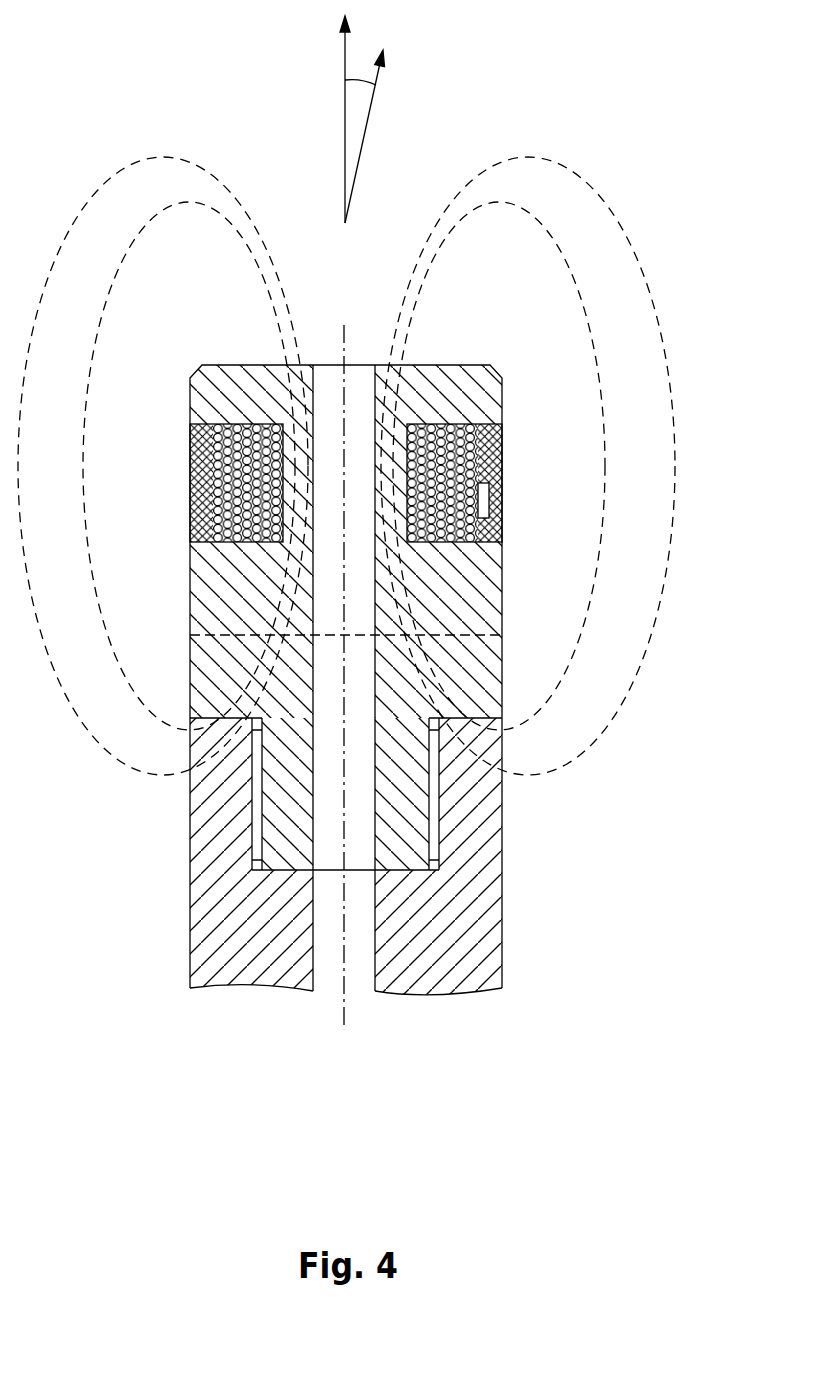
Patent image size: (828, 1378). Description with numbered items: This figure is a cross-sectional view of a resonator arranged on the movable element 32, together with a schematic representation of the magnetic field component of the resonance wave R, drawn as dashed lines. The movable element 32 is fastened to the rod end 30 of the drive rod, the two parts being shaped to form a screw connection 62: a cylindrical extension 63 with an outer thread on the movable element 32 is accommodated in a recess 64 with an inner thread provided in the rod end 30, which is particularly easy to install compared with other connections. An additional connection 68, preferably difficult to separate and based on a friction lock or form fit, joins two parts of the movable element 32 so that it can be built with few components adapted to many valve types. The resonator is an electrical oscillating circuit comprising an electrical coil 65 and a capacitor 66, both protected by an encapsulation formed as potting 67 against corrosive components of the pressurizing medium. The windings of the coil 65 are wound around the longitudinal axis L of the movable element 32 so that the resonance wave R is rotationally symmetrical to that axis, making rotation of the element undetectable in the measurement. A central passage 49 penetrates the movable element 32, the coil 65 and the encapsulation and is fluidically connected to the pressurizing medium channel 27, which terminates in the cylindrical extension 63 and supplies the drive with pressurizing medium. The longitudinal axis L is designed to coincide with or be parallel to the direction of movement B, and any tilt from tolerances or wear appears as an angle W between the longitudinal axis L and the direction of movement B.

The pressurizing medium channel 27 is at (332, 972).
The rod end 30 is at (227, 760).
The movable element 32 is at (240, 583).
The central passage 49 is at (358, 440).
The screw connection 62 is at (250, 823).
The cylindrical extension 63 is at (405, 838).
The recess 64 is at (438, 808).
The electrical coil 65 is at (192, 526).
The capacitor 66 is at (492, 500).
The potting 67 is at (235, 503).
The additional connection 68 is at (466, 640).
The longitudinal axis L is at (342, 100).
The angle W is at (358, 108).
The direction of movement B is at (367, 133).
The resonance wave R is at (582, 753).